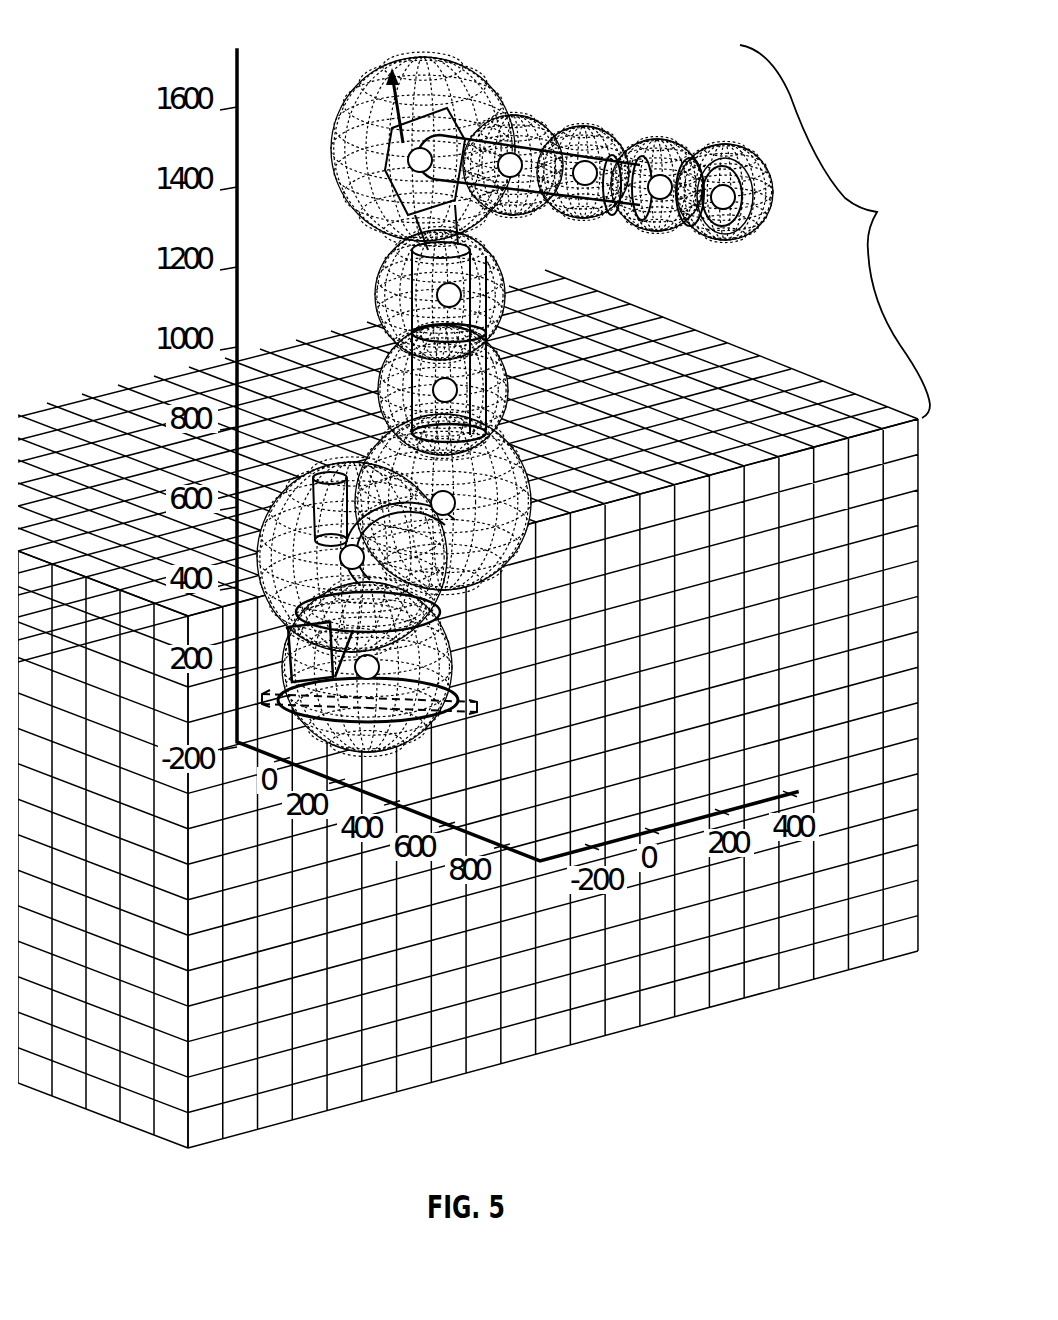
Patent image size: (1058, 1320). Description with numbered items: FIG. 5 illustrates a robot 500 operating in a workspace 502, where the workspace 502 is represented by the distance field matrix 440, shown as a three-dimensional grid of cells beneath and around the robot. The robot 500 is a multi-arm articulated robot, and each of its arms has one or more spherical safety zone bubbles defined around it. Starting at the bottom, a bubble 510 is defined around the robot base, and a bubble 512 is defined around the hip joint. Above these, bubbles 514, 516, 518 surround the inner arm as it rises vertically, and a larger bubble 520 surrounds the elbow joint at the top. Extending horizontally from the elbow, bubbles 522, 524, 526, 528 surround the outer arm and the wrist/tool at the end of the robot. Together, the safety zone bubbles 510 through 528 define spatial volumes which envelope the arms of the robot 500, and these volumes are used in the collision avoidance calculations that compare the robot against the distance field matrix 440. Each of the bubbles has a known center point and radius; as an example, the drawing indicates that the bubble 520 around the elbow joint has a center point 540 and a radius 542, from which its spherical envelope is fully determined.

The distance field matrix 440 is at (282, 1122).
The robot 500 is at (553, 390).
The workspace 502 is at (835, 231).
The bubble 510 is at (466, 648).
The bubble 512 is at (292, 490).
The bubble 514 is at (526, 490).
The bubble 516 is at (512, 388).
The bubble 518 is at (380, 292).
The bubble 520 is at (366, 87).
The bubble 522 is at (527, 112).
The bubble 524 is at (608, 122).
The bubble 526 is at (690, 130).
The bubble 528 is at (768, 214).
The center point 540 is at (468, 70).
The radius 542 is at (348, 124).